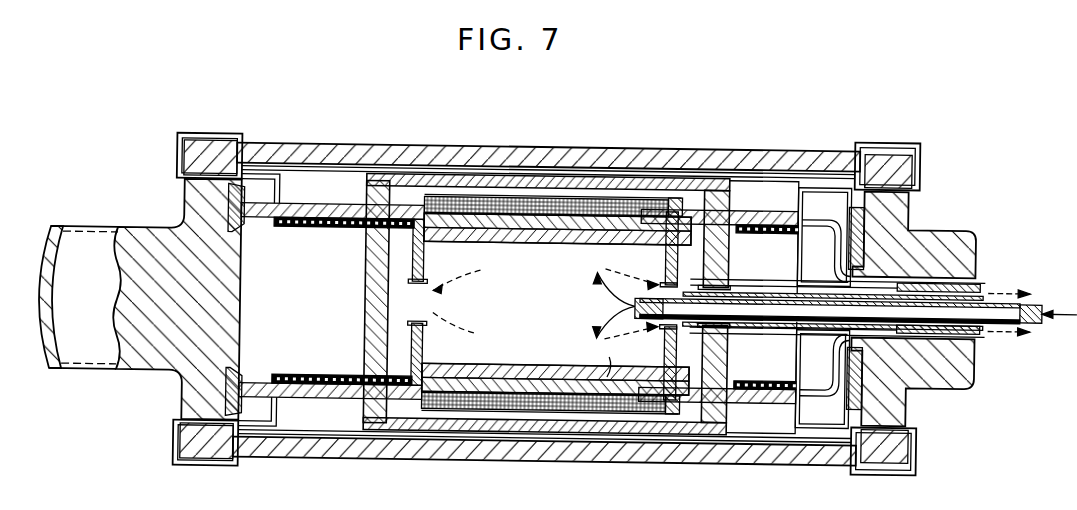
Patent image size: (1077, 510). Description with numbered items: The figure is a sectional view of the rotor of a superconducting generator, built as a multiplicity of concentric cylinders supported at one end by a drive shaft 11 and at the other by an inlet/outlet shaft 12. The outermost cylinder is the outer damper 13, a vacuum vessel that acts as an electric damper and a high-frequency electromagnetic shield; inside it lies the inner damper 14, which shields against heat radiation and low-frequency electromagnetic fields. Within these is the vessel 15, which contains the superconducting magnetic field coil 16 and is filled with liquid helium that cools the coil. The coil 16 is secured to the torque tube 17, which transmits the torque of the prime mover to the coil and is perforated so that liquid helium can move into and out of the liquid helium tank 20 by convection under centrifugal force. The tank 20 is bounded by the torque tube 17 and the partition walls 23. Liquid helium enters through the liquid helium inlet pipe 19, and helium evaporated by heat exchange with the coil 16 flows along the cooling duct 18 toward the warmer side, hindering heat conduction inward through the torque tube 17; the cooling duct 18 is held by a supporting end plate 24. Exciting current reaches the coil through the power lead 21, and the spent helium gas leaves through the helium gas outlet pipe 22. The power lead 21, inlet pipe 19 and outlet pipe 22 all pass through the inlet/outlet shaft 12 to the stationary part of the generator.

The drive shaft 11 is at (148, 232).
The inlet/outlet shaft 12 is at (945, 243).
The outer damper 13 is at (303, 152).
The inner damper 14 is at (412, 177).
The vessel 15 is at (474, 196).
The superconducting magnetic field coil 16 is at (490, 214).
The torque tube 17 is at (581, 243).
The cooling duct 18 is at (308, 231).
The liquid helium inlet pipe 19 is at (773, 317).
The liquid helium tank 20 is at (543, 314).
The power lead 21 is at (740, 325).
The helium gas outlet pipe 22 is at (973, 335).
The partition walls 23 is at (424, 258).
The supporting end plate 24 is at (728, 267).